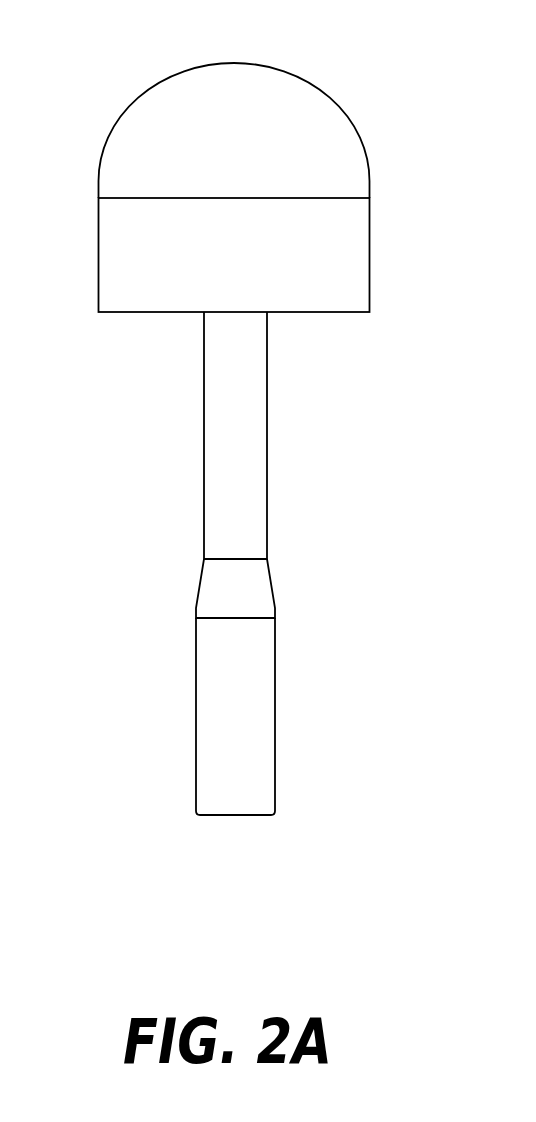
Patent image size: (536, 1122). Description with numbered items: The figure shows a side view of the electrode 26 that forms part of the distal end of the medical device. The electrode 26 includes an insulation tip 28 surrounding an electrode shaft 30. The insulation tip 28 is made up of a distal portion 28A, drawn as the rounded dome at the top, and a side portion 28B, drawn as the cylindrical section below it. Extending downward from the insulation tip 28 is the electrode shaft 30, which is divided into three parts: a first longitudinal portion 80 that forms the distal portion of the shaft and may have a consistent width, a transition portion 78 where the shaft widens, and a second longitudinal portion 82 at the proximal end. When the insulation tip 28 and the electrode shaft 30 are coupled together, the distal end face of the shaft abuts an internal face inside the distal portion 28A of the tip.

The electrode 26 is at (136, 493).
The insulation tip 28 is at (361, 149).
The distal portion 28A is at (152, 88).
The side portion 28B is at (369, 242).
The electrode shaft 30 is at (267, 478).
The first longitudinal portion 80 is at (267, 392).
The transition portion 78 is at (272, 588).
The second longitudinal portion 82 is at (275, 713).